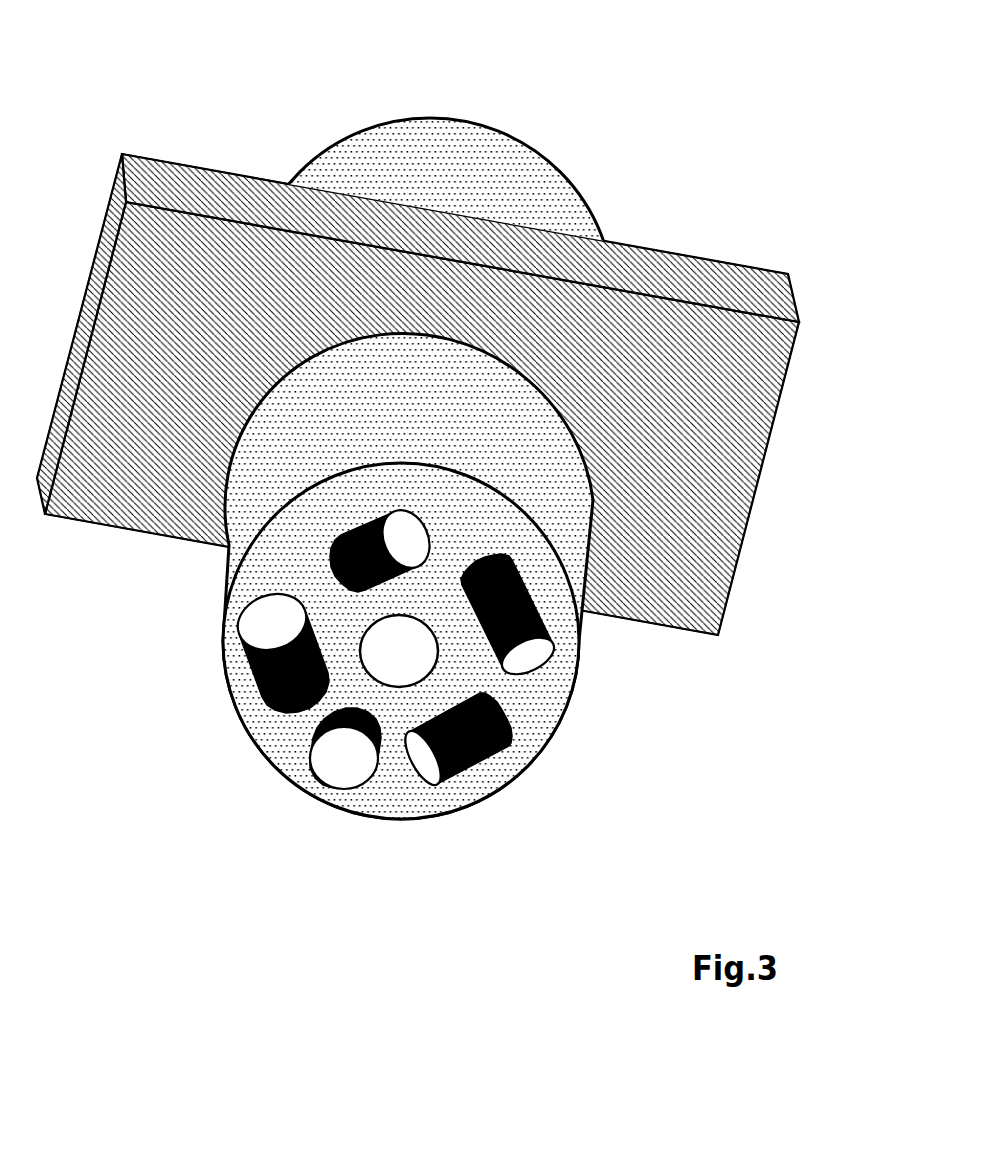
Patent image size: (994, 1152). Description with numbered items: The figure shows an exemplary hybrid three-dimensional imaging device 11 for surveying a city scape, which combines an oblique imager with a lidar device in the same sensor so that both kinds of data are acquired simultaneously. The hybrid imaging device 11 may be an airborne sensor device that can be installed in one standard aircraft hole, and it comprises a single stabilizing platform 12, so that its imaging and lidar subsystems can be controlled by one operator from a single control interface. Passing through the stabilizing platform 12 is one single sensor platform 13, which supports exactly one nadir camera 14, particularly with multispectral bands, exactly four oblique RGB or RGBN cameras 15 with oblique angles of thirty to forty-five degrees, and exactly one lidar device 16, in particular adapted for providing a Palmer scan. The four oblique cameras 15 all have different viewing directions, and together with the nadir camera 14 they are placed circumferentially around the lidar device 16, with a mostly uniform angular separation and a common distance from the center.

The hybrid 3D-imaging device 11 is at (150, 60).
The stabilizing platform 12 is at (707, 285).
The sensor platform 13 is at (480, 532).
The nadir camera 14 is at (340, 755).
The oblique cameras 15 is at (423, 762).
The lidar device 16 is at (398, 668).